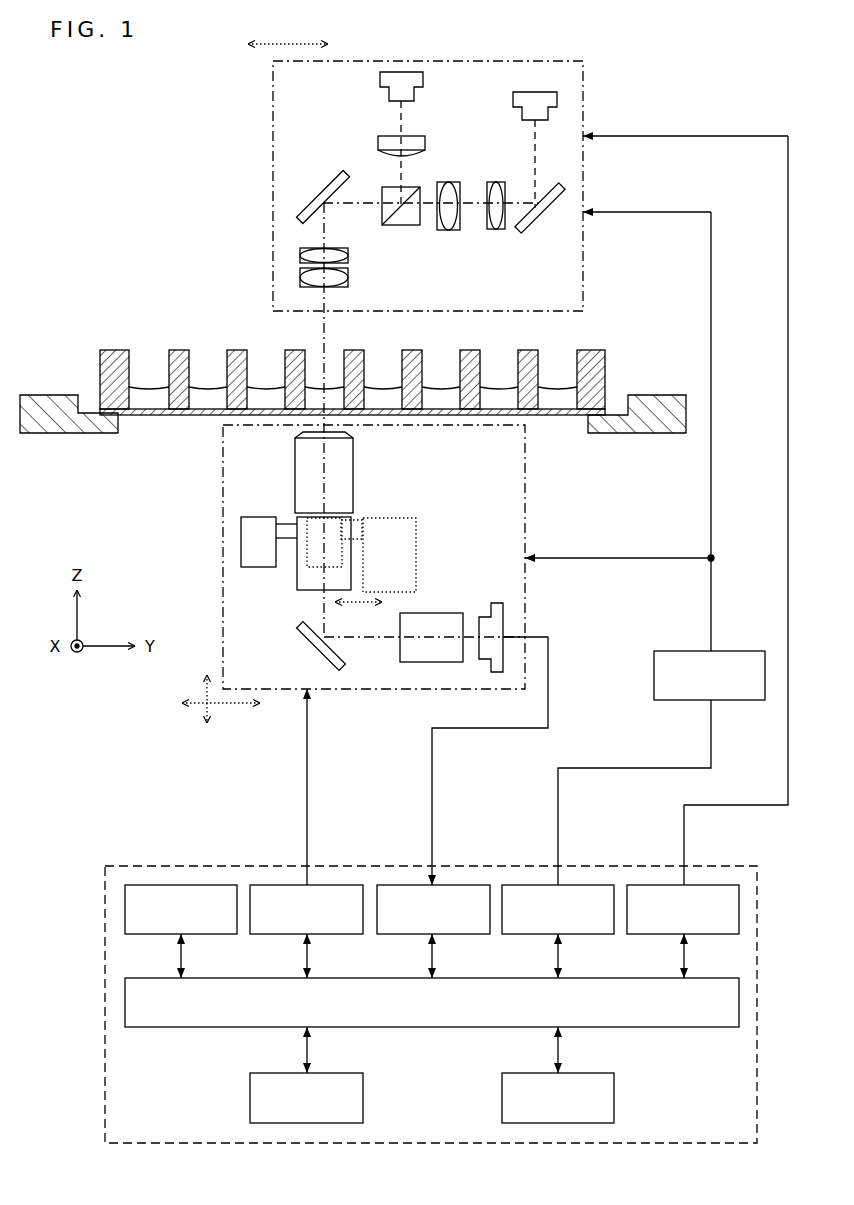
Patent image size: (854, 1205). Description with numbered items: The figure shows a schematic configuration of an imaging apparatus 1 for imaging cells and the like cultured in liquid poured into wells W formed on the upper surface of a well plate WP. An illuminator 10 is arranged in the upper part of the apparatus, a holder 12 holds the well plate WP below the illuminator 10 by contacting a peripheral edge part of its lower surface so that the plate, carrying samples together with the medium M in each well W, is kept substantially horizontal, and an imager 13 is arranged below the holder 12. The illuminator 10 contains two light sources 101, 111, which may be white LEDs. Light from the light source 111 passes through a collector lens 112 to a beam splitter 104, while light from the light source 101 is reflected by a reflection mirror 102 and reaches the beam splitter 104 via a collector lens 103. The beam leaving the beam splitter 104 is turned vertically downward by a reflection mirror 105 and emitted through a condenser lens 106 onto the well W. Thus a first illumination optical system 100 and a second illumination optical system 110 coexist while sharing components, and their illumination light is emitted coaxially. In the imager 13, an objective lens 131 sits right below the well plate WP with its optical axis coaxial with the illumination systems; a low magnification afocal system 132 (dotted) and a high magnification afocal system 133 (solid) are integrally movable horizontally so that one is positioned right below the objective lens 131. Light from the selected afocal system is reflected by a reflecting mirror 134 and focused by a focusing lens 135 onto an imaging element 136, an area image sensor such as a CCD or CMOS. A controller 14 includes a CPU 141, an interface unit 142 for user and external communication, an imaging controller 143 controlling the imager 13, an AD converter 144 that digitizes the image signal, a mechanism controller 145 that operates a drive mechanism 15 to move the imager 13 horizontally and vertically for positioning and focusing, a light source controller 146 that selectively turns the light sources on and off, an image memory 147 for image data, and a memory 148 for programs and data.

The imaging apparatus 1 is at (722, 91).
The illuminator 10 is at (272, 110).
The first illumination optical system 100 is at (500, 130).
The light source 101 is at (557, 100).
The reflection mirror 102 is at (532, 227).
The collector lens 103 is at (432, 175).
The beam splitter 104 is at (413, 226).
The reflection mirror 105 is at (332, 185).
The condenser lens 106 is at (355, 243).
The second illumination optical system 110 is at (426, 114).
The light source 111 is at (380, 80).
The collector lens 112 is at (378, 141).
The holder 12 is at (68, 435).
The imager 13 is at (222, 462).
The objective lens 131 is at (353, 453).
The low magnification afocal system 132 is at (300, 556).
The high magnification afocal system 133 is at (352, 520).
The reflecting mirror 134 is at (302, 636).
The focusing lens 135 is at (436, 613).
The imaging element 136 is at (503, 618).
The controller 14 is at (103, 900).
The CPU 141 is at (125, 1011).
The interface unit 142 is at (152, 885).
The imaging controller 143 is at (290, 885).
The AD converter 144 is at (403, 885).
The mechanism controller 145 is at (528, 885).
The light source controller 146 is at (653, 885).
The image memory 147 is at (250, 1099).
The memory 148 is at (502, 1099).
The drive mechanism 15 is at (675, 651).
The medium M is at (153, 392).
The well W is at (252, 384).
The well plate WP is at (605, 376).